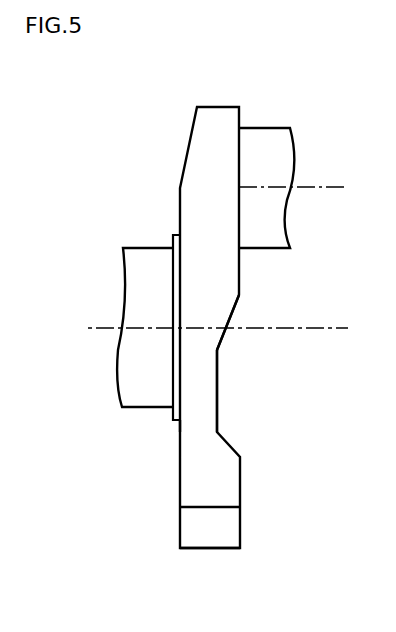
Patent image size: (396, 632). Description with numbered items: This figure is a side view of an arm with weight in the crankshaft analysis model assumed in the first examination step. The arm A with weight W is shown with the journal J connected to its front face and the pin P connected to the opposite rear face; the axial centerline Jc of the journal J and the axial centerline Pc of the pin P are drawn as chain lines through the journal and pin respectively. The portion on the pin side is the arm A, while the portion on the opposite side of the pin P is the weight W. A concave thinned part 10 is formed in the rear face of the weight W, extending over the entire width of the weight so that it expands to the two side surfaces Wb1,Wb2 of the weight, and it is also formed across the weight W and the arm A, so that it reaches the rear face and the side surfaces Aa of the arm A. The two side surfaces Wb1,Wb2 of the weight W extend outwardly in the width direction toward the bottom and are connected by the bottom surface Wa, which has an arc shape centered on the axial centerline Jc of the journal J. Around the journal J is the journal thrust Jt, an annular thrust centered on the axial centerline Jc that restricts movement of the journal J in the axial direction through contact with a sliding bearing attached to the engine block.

The arm A is at (172, 188).
The side surfaces of the arm Aa is at (192, 318).
The thinned part 10 is at (221, 370).
The pin P is at (264, 128).
The axial centerline of the pin Pc is at (332, 187).
The axial centerline of the journal Jc is at (334, 327).
The journal J is at (150, 245).
The journal thrust Jt is at (173, 420).
The side surfaces of the weight Wb1,Wb2 is at (192, 428).
The weight W is at (180, 527).
The bottom surface of the weight Wa is at (206, 538).